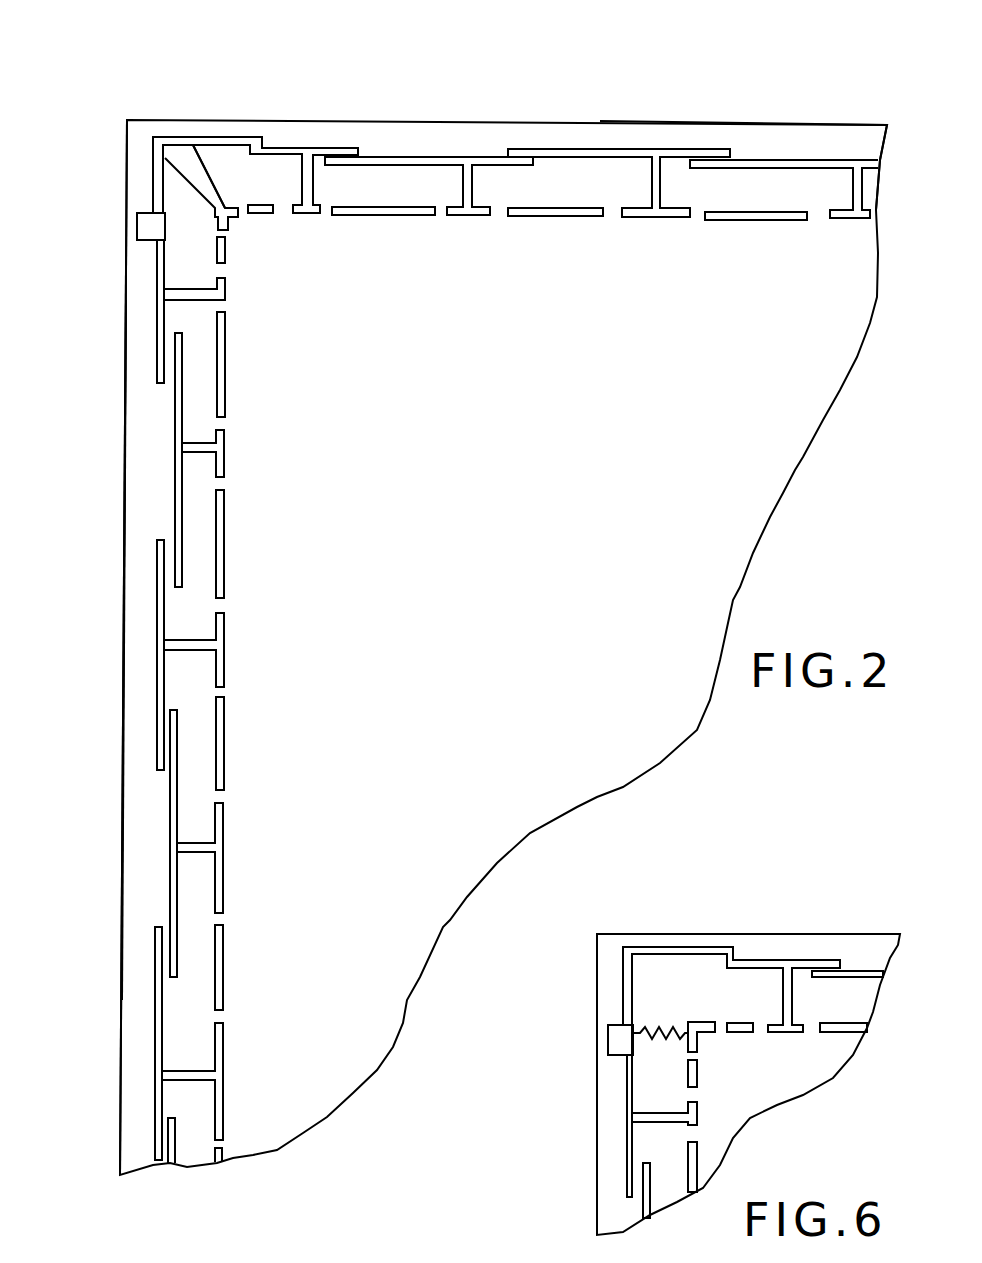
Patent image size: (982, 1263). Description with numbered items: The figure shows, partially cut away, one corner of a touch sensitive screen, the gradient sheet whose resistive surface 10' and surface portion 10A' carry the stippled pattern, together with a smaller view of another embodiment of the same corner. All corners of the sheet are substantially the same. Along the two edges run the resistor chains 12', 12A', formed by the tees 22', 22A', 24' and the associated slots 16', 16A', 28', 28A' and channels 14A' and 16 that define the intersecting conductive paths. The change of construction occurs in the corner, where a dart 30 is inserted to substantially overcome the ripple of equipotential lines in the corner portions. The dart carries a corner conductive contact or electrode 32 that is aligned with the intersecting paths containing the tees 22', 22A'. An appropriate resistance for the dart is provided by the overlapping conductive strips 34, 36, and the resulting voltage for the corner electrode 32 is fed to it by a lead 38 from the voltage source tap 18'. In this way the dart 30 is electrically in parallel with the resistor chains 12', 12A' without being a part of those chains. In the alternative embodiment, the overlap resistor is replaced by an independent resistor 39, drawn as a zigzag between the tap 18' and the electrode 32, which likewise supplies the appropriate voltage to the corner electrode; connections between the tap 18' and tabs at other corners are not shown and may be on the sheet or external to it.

In FIG. 2, the resistive surface 10' is at (503, 647).
In FIG. 2, the molded panel edge portion 10A' is at (97, 647).
In FIG. 2, the resistor chain 12' is at (743, 131).
In FIG. 2, the resistor chain 12A' is at (100, 650).
In FIG. 2, the longitudinal reinforcing channel 14A' is at (134, 465).
In FIG. 6, the longitudinal reinforcing channel 14A' is at (625, 1180).
In FIG. 2, the top longitudinal slot 16' is at (489, 127).
In FIG. 2, the side longitudinal channel 16A' is at (134, 655).
In FIG. 2, the tap 18' is at (106, 210).
In FIG. 6, the tap 18' is at (583, 1040).
In FIG. 2, the tee 22' is at (340, 130).
In FIG. 6, the tee 22' is at (850, 989).
In FIG. 2, the tee 22A' is at (135, 327).
In FIG. 6, the tee 22A' is at (625, 1096).
In FIG. 2, the tee 24' is at (759, 131).
In FIG. 2, the transverse slot 28' is at (515, 133).
In FIG. 2, the side transverse slot 28A' is at (134, 930).
In FIG. 2, the dart 30 is at (214, 178).
In FIG. 2, the corner conductive contact or electrode 32 is at (240, 207).
In FIG. 6, the corner conductive contact or electrode 32 is at (700, 1020).
In FIG. 2, the conductive strip 34 is at (172, 132).
In FIG. 6, the conductive strip 34 is at (645, 947).
In FIG. 2, the conductive strip 36 is at (162, 162).
In FIG. 2, the lead 38 is at (197, 145).
In FIG. 6, the top longitudinal slot 16 is at (748, 1056).
In FIG. 6, the independent resistor 39 is at (657, 1032).